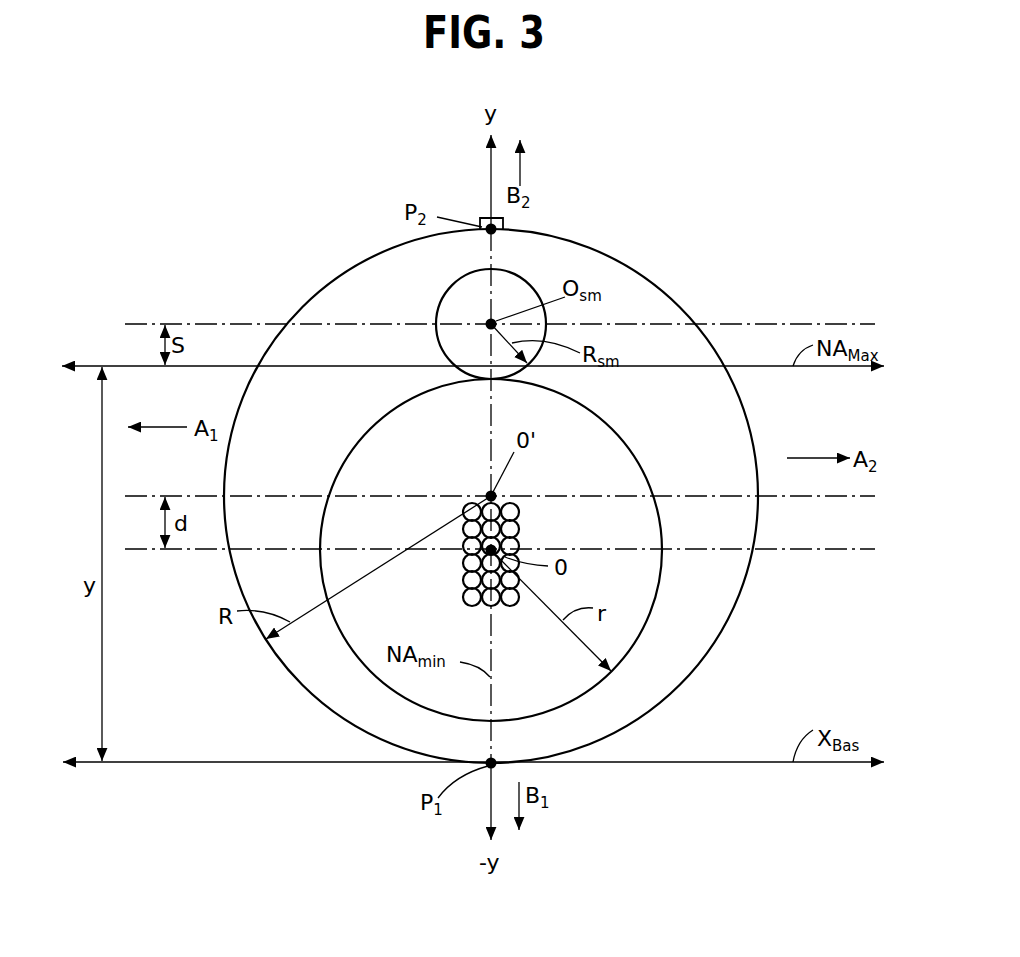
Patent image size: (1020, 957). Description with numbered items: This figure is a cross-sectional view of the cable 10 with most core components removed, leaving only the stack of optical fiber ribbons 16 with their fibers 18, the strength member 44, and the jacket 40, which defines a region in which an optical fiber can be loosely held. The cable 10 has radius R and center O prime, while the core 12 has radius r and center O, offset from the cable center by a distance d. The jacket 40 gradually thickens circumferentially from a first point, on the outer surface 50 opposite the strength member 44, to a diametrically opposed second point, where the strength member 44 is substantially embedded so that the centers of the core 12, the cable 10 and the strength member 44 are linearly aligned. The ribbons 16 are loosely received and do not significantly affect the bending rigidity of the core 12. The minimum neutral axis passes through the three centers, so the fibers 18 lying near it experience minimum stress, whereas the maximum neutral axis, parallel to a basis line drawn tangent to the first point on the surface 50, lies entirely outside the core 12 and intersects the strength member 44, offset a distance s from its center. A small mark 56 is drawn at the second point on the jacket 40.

The cable 10 is at (290, 233).
The core 12 is at (637, 454).
The optical fiber ribbons 16 is at (502, 530).
The fibers 18 is at (502, 508).
The jacket 40 is at (640, 283).
The strength member 44 is at (508, 285).
The outer surface 50 is at (297, 312).
The reference mark at point P2 56 is at (480, 218).